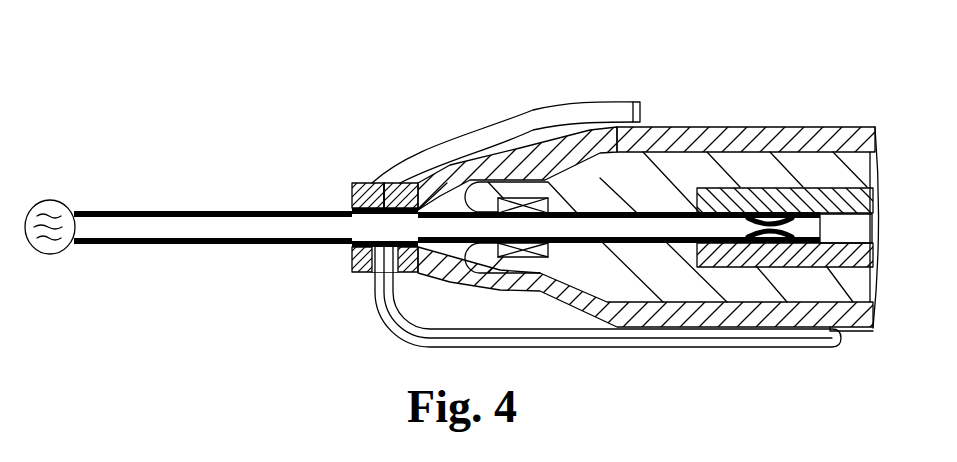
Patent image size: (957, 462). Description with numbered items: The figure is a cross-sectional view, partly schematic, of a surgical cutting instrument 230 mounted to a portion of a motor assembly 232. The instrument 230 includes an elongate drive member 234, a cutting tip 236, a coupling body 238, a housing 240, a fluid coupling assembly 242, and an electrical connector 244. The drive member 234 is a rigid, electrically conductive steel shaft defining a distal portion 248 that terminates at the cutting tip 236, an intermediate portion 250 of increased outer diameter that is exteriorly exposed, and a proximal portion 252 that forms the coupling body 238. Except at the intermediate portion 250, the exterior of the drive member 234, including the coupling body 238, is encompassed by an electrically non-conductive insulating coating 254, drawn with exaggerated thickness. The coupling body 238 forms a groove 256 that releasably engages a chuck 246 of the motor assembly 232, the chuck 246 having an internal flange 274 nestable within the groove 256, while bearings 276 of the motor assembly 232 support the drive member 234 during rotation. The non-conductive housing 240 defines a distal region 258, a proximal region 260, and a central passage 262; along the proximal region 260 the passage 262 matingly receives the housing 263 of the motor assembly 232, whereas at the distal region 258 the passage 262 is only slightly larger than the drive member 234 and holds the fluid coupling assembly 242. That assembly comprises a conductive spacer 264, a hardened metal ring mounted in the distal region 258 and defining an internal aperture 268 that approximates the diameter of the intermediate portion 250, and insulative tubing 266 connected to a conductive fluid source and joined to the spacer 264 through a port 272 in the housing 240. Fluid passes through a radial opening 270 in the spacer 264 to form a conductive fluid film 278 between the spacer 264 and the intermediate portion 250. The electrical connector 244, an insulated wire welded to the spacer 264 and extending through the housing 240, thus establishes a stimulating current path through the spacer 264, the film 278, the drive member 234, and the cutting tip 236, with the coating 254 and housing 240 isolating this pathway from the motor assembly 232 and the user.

The surgical cutting instrument 230 is at (674, 107).
The motor assembly 232 is at (858, 149).
The elongate drive member 234 is at (237, 249).
The cutting tip 236 is at (52, 195).
The coupling body 238 is at (852, 335).
The housing 240 is at (843, 114).
The fluid coupling assembly 242 is at (333, 205).
The electrical connector 244 is at (580, 349).
The chuck 246 is at (876, 318).
The distal portion 248 is at (112, 228).
The intermediate portion 250 is at (402, 226).
The proximal portion 252 is at (707, 233).
The insulating coating 254 is at (155, 245).
The groove 256 is at (788, 247).
The distal region 258 is at (400, 276).
The proximal region 260 is at (799, 126).
The central passage 262 is at (615, 150).
The housing of the motor assembly 263 is at (657, 275).
The conductive spacer 264 is at (352, 205).
The tubing 266 is at (572, 107).
The internal aperture 268 is at (446, 205).
The radial opening 270 is at (396, 190).
The port 272 is at (368, 195).
The internal flange 274 is at (770, 212).
The bearings 276 is at (548, 250).
The conductive fluid film 278 is at (348, 265).